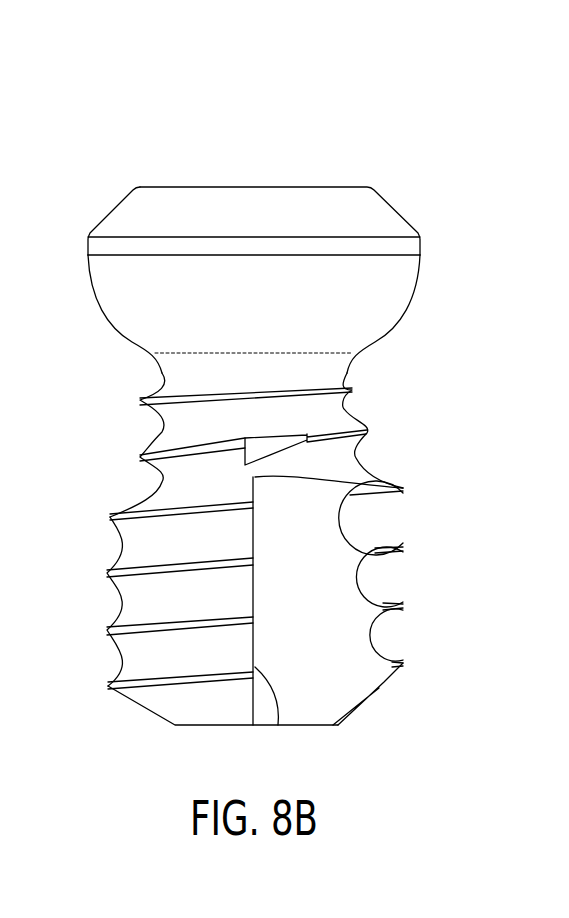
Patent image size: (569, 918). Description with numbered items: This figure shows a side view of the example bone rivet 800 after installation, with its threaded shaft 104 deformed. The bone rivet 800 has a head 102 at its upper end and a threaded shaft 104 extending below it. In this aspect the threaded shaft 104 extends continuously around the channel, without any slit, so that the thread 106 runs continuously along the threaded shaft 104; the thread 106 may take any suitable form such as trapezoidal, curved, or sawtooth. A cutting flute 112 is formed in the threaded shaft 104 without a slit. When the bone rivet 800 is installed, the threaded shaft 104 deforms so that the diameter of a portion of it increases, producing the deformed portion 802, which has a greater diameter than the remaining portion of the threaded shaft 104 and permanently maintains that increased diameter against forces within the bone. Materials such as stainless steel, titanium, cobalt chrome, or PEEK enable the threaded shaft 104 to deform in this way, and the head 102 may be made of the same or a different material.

The bone rivet 800 is at (467, 142).
The head 102 is at (389, 303).
The threaded shaft 104 is at (472, 502).
The thread 106 is at (105, 577).
The deformed portion 802 is at (421, 470).
The cutting flute 112 is at (255, 645).